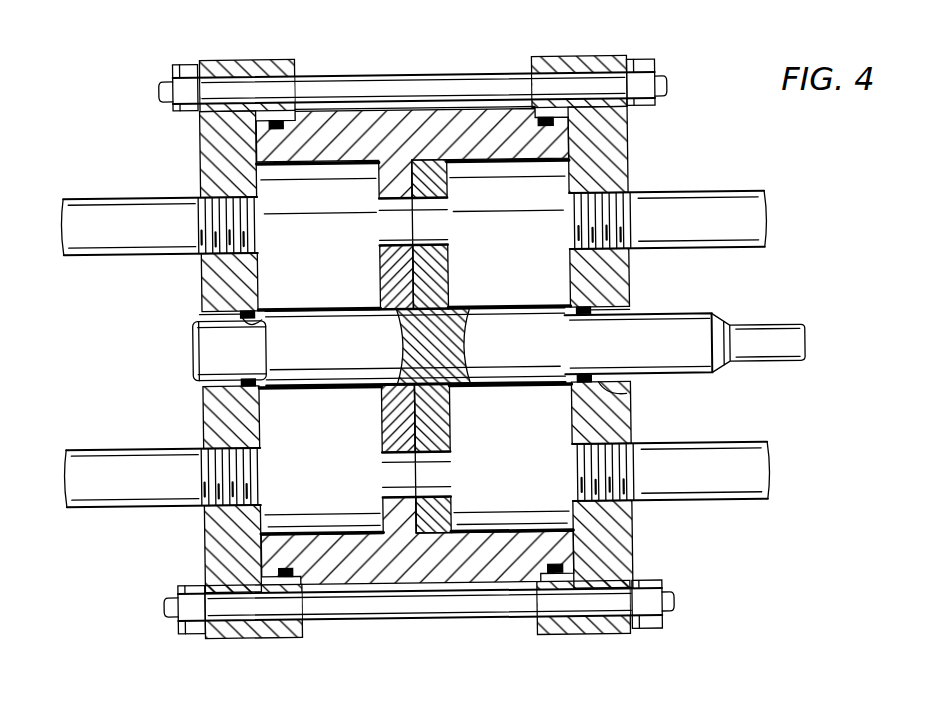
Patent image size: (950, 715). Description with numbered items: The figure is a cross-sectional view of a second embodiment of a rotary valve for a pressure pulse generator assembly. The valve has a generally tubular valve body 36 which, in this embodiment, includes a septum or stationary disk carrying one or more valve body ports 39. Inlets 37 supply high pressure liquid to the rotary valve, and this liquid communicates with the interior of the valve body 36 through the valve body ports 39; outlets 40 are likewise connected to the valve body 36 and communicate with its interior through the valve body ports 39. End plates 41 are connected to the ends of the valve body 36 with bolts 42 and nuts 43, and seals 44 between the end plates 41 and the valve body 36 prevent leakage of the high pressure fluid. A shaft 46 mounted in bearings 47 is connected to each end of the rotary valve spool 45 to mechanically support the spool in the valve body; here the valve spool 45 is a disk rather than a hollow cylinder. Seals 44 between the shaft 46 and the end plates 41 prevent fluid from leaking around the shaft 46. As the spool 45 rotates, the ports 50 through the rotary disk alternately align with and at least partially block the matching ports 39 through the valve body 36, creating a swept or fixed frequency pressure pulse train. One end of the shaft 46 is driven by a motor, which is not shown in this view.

The valve body 36 is at (385, 110).
The inlets 37 is at (105, 195).
The valve body ports 39 is at (256, 238).
The outlets 40 is at (742, 193).
The end plates 41 is at (203, 552).
The bolts 42 is at (668, 86).
The nuts 43 is at (645, 62).
The seals 44 is at (277, 118).
The rotary valve spool 45 is at (450, 285).
The shaft 46 is at (327, 308).
The bearings 47 is at (200, 312).
The ports 50 is at (446, 225).